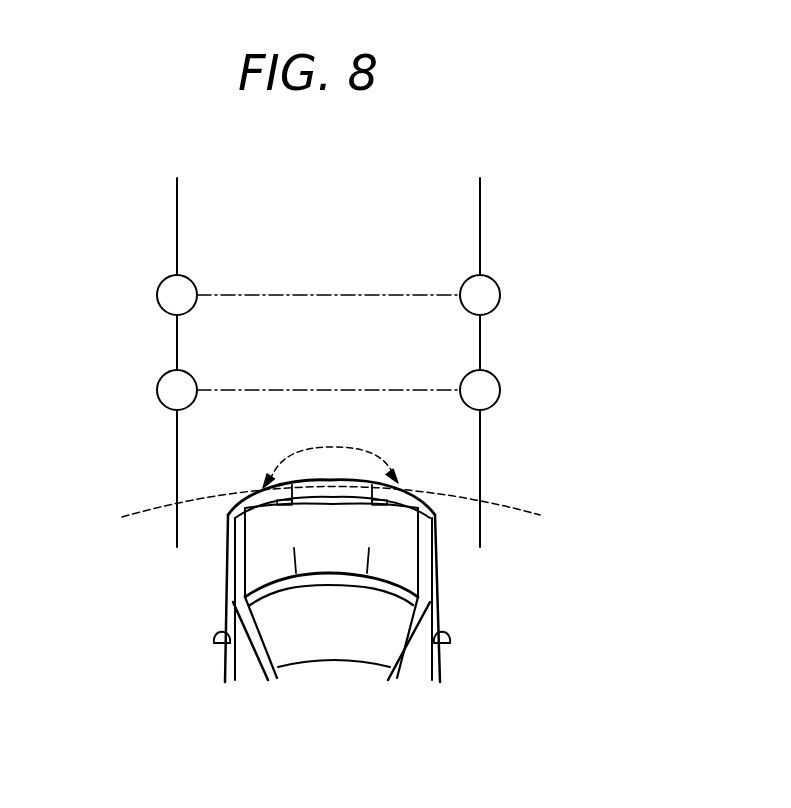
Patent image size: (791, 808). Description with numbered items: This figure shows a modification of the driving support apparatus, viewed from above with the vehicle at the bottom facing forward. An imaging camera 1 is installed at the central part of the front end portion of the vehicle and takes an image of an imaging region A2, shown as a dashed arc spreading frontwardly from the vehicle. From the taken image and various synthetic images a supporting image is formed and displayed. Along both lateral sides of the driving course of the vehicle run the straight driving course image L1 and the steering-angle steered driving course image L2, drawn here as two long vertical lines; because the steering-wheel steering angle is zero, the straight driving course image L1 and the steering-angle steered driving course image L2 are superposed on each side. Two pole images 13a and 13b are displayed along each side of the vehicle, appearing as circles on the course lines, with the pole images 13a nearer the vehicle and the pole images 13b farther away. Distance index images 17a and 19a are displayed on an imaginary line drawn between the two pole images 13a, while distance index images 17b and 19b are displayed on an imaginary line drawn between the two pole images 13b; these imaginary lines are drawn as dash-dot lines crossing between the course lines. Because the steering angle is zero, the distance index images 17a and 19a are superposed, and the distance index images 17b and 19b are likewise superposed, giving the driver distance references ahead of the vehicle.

The imaging camera 1 is at (332, 481).
The pole image 13a is at (157, 390).
The pole image 13b is at (157, 295).
The distance index image 17a is at (328, 358).
The distance index image 19a is at (307, 390).
The distance index image 17b is at (328, 263).
The distance index image 19b is at (307, 295).
The imaging region A2 is at (356, 448).
The straight driving course image L1 is at (332, 362).
The steering-angle steered driving course image L2 is at (177, 464).